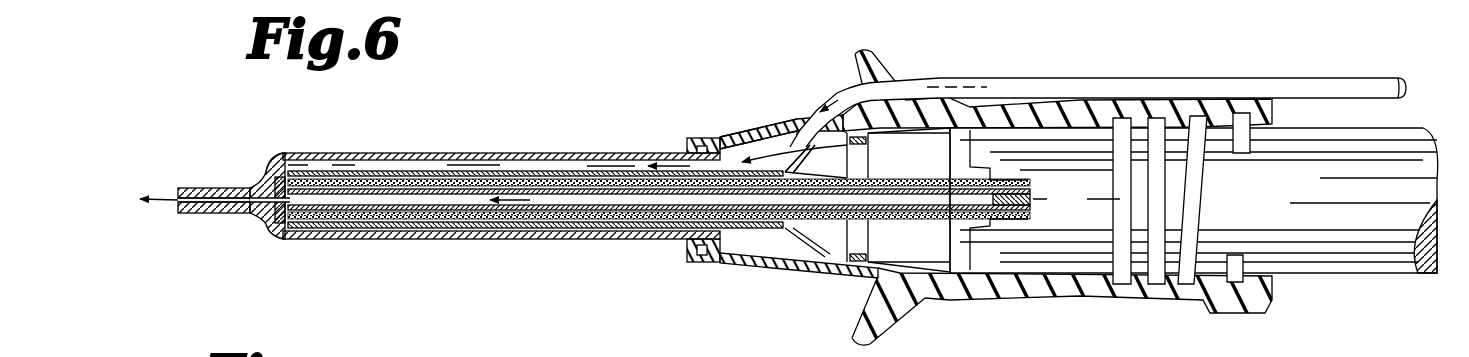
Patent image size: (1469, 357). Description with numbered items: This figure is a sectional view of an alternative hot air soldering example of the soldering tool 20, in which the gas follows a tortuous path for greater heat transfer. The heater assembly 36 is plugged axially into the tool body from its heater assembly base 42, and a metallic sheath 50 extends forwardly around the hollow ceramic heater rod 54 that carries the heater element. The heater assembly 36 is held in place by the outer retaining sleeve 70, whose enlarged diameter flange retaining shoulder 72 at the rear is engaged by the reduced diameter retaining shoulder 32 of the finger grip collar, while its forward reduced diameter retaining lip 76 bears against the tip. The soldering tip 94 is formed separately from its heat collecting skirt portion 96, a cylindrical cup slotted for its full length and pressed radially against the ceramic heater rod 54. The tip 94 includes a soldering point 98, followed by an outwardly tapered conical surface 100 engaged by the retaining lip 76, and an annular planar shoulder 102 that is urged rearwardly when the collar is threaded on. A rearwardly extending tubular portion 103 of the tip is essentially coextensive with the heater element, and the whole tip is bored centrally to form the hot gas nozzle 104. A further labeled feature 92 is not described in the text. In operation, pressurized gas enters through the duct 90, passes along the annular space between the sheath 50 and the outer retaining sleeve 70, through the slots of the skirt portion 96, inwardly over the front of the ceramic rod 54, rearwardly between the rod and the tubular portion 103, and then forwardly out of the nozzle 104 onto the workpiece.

The soldering tool 20 is at (1028, 70).
The reduced diameter retaining shoulder 32 is at (687, 146).
The heater assembly 36 is at (930, 168).
The heater assembly base 42 is at (846, 172).
The metallic sheath 50 is at (743, 268).
The hollow ceramic heater rod 54 is at (718, 263).
The outer retaining sleeve 70 is at (512, 154).
The enlarged diameter flange retaining shoulder 72 is at (730, 137).
The reduced diameter retaining lip 76 is at (265, 154).
The duct 90 is at (1160, 78).
The inlet channel 92 is at (758, 152).
The soldering tip 94 is at (233, 214).
The heat collecting skirt portion 96 is at (367, 218).
The soldering point 98 is at (200, 187).
The conical surface 100 is at (258, 217).
The annular planar shoulder 102 is at (288, 228).
The tubular portion 103 is at (387, 219).
The hot gas nozzle 104 is at (192, 209).